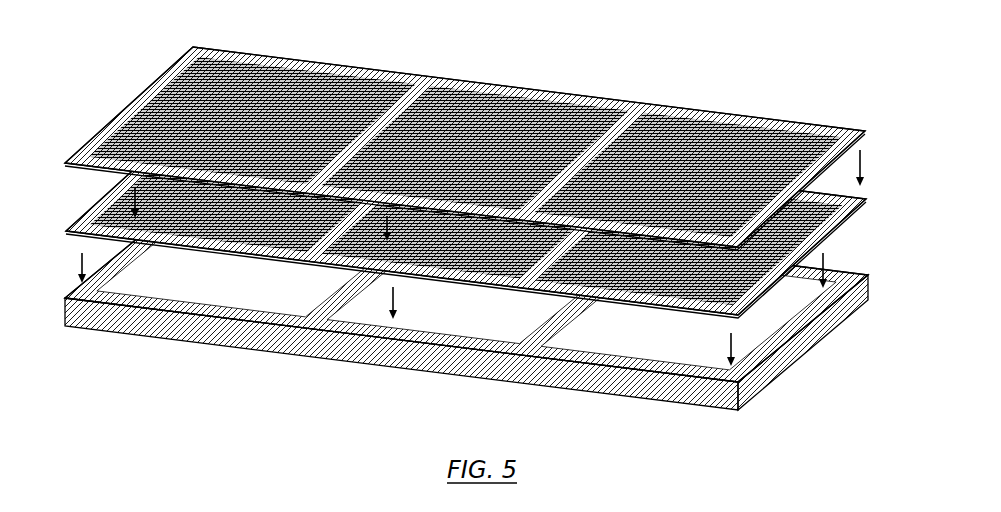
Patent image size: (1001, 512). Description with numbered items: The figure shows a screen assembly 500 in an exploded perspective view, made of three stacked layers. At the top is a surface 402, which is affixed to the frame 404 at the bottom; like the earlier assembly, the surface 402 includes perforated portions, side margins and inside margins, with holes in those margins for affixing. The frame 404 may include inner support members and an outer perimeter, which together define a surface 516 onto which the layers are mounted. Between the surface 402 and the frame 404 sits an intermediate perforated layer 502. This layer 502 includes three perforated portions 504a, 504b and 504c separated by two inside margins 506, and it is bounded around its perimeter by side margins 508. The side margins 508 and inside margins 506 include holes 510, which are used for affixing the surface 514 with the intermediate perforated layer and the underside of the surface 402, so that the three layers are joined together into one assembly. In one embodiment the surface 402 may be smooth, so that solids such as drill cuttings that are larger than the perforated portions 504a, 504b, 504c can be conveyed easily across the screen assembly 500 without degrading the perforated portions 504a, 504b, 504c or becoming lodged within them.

The screen assembly 500 is at (491, 57).
The surface 402 is at (617, 100).
The frame 404 is at (466, 300).
The intermediate perforated layer 502 is at (471, 238).
The perforated portion 504a is at (259, 216).
The perforated portion 504b is at (430, 249).
The perforated portion 504c is at (650, 288).
The inside margins 506 is at (307, 250).
The side margins 508 is at (90, 210).
The holes 510 is at (114, 194).
The surface 514 is at (76, 300).
The surface 516 is at (80, 236).